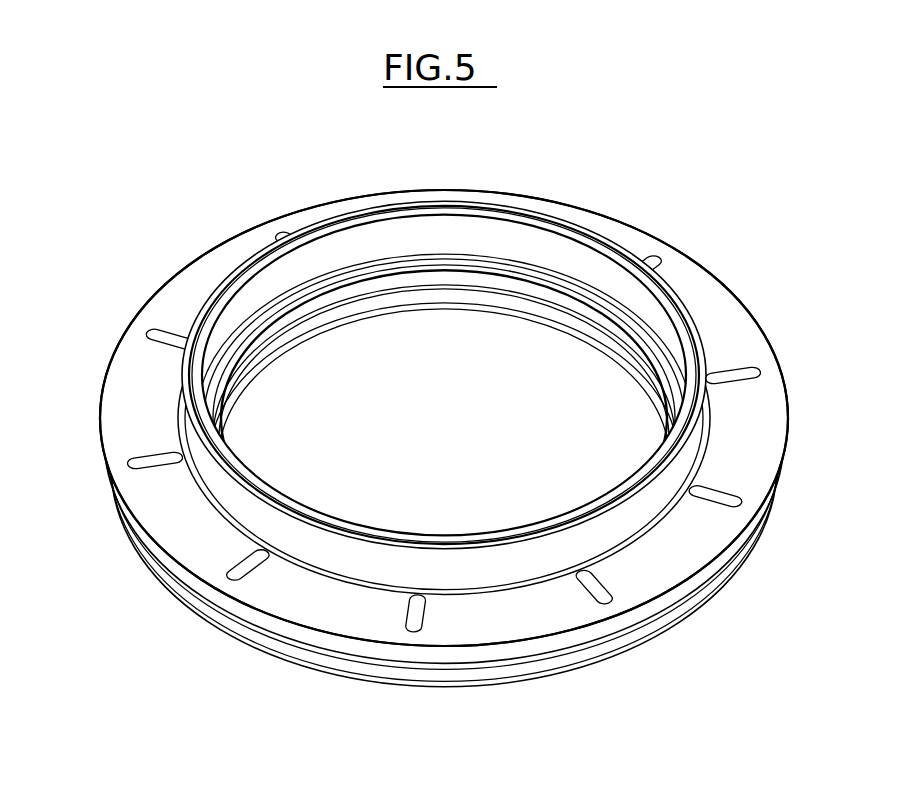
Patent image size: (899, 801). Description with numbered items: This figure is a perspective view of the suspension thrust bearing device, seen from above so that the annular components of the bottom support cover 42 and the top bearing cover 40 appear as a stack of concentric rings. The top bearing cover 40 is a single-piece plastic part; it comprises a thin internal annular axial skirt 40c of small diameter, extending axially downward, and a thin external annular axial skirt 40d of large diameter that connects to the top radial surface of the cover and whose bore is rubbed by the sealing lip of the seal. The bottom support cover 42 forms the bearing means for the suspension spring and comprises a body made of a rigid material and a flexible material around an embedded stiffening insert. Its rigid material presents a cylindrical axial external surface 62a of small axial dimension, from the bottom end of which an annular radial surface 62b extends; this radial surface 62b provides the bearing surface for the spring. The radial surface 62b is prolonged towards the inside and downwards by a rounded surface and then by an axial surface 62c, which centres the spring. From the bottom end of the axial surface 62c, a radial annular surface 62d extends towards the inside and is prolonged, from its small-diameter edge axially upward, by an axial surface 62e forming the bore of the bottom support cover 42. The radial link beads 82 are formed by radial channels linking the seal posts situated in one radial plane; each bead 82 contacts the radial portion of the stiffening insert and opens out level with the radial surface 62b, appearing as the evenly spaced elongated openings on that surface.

The top bearing cover 40 is at (444, 509).
The internal annular axial skirt 40c is at (398, 303).
The external annular axial skirt 40d is at (215, 622).
The bottom support cover 42 is at (243, 234).
The cylindrical axial external surface 62a is at (128, 518).
The annular radial surface 62b is at (762, 470).
The axial surface 62c is at (687, 453).
The radial annular surface 62d is at (213, 283).
The axial surface forming the bore 62e is at (318, 253).
The radial link bead 82 is at (597, 592).